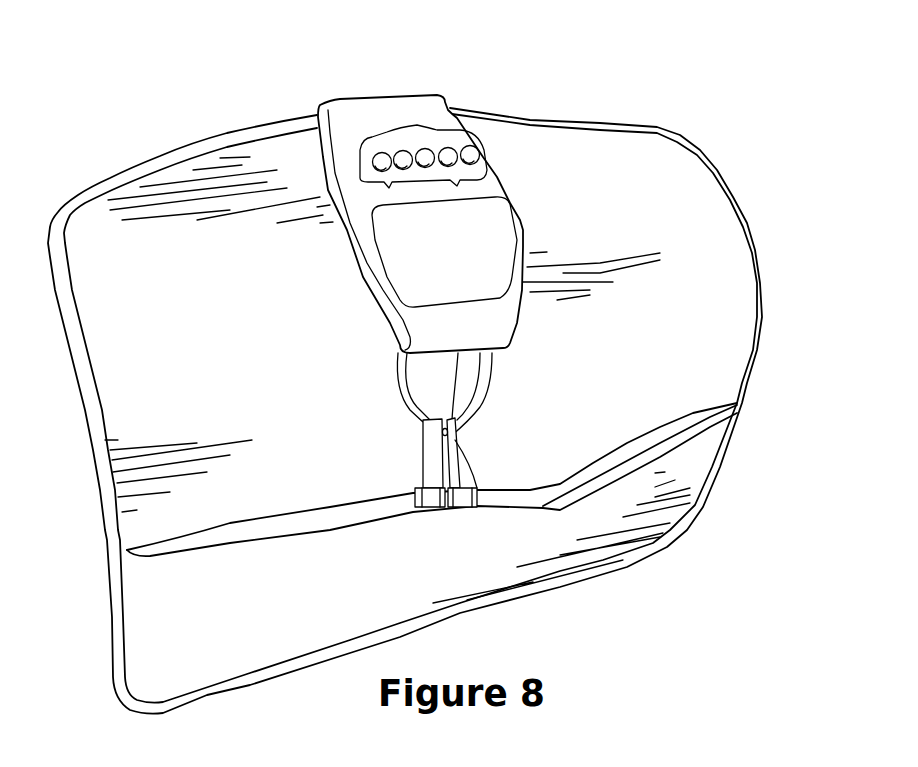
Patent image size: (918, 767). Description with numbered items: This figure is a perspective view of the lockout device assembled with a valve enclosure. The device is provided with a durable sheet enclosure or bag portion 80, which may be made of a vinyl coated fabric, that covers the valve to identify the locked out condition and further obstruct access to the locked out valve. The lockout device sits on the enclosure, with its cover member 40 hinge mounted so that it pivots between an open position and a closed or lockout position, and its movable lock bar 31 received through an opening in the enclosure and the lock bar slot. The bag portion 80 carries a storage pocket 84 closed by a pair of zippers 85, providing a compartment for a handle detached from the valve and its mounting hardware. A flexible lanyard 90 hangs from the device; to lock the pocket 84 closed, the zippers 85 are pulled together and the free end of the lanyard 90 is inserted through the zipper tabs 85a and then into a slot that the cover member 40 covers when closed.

The movable lock bar 31 is at (457, 140).
The cover member 40 is at (489, 178).
The bag portion 80 is at (700, 238).
The storage pocket 84 is at (473, 553).
The zippers 85 is at (452, 507).
The zipper tabs 85a is at (447, 458).
The lanyard 90 is at (487, 383).